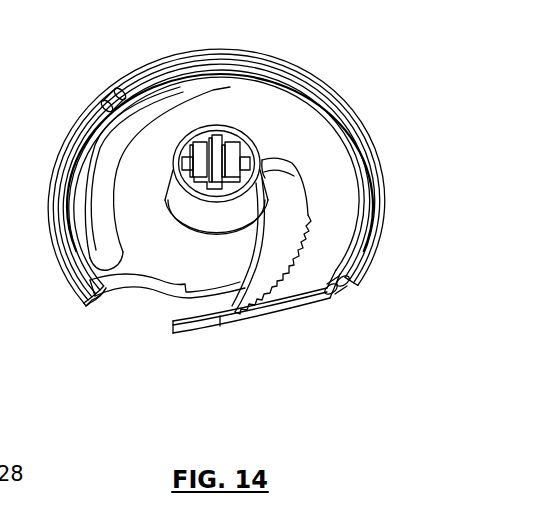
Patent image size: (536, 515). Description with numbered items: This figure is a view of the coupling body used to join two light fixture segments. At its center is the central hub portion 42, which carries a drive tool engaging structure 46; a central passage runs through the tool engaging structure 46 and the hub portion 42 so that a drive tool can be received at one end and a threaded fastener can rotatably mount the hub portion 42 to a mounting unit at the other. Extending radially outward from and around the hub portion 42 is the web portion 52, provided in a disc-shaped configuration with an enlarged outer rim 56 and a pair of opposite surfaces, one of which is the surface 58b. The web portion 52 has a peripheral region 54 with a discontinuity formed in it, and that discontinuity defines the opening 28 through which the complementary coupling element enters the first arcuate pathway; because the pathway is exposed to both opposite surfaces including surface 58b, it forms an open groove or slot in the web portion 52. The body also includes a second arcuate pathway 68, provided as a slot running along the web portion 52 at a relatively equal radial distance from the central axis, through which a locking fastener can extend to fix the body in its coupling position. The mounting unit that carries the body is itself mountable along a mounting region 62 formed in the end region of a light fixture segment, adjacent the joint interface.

The opening 28 is at (100, 311).
The central hub portion 42 is at (258, 154).
The drive tool engaging structure 46 is at (235, 138).
The web portion 52 is at (330, 191).
The peripheral region 54 is at (208, 40).
The enlarged outer rim 56 is at (357, 264).
The opposite surface 58b is at (145, 215).
The mounting region 62 is at (193, 303).
The second arcuate pathway 68 is at (128, 137).